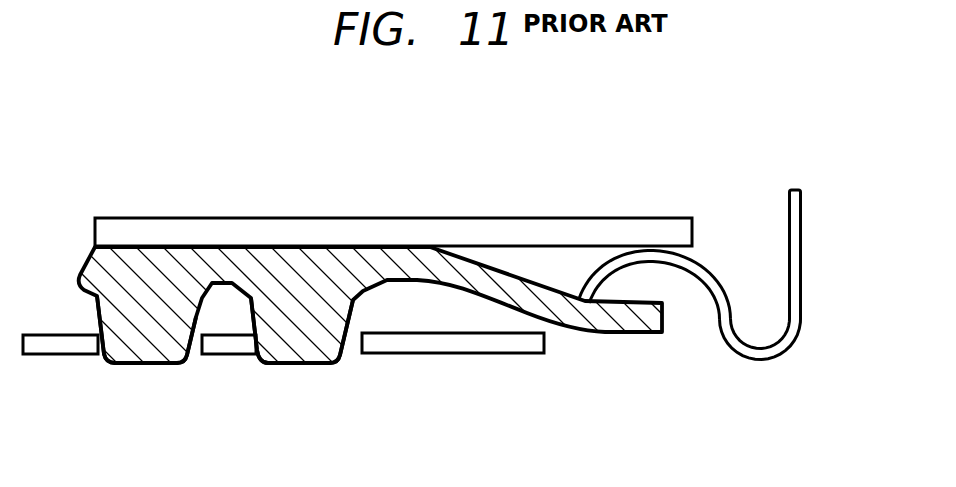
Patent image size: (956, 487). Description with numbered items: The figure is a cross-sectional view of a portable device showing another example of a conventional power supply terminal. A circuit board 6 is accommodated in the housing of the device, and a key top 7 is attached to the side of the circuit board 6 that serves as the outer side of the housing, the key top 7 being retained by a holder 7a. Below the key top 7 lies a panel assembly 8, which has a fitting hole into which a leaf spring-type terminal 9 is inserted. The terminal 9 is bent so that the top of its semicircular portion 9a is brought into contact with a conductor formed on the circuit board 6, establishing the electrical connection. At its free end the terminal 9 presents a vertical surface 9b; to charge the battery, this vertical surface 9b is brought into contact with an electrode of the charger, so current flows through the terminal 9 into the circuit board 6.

The circuit board 6 is at (363, 230).
The key top 7 is at (418, 268).
The holder 7a is at (152, 345).
The panel assembly 8 is at (59, 347).
The leaf spring-type terminal 9 is at (707, 250).
The semicircular portion 9a is at (648, 263).
The vertical surface 9b is at (805, 220).